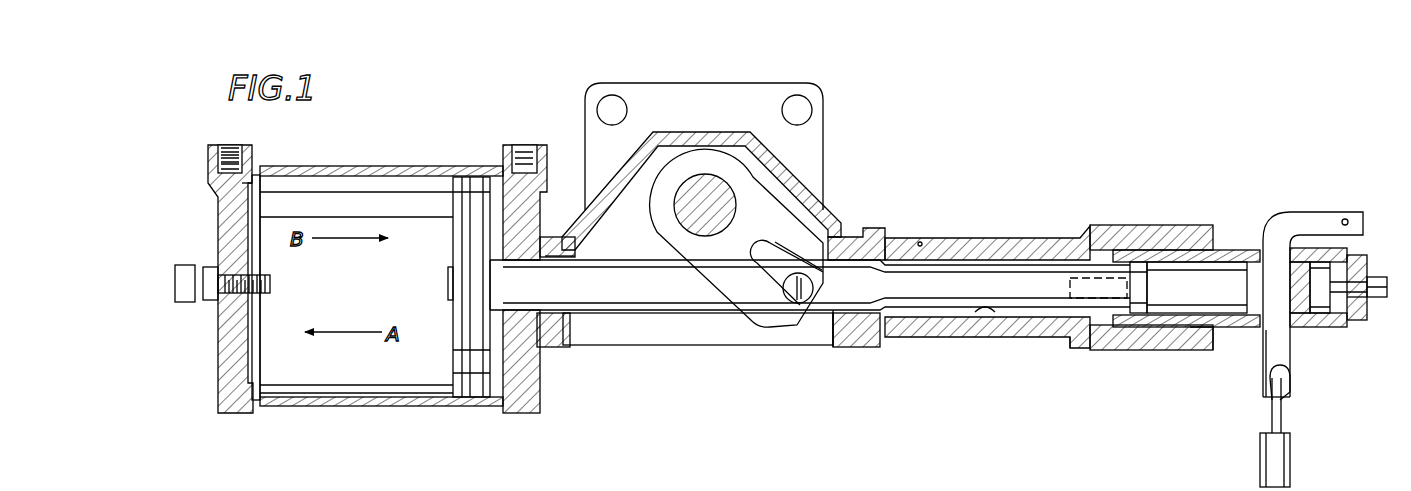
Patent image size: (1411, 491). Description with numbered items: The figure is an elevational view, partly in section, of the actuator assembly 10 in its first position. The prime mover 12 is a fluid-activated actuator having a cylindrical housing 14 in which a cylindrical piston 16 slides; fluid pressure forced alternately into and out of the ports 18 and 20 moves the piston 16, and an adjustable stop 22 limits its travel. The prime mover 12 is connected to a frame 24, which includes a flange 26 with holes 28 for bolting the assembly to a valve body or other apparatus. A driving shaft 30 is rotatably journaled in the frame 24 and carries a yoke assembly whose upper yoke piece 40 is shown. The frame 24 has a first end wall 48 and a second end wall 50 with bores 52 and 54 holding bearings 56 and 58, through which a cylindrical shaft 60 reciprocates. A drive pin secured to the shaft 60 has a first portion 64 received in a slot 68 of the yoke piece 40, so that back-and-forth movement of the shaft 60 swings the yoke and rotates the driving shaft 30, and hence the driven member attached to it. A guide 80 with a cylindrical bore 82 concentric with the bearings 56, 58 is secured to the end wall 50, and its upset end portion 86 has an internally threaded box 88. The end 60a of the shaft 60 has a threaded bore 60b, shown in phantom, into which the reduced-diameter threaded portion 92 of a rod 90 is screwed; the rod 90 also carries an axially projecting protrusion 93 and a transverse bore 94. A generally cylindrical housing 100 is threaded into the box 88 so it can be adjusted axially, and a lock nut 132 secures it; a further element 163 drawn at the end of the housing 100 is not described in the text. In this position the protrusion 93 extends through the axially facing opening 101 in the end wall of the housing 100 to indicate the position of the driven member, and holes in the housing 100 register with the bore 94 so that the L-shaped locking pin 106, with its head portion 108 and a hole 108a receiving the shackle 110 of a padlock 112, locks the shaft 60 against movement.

The actuator assembly 10 is at (982, 142).
The prime mover 12 is at (353, 164).
The cylindrical housing 14 is at (400, 167).
The cylindrical piston 16 is at (464, 396).
The port 18 is at (522, 148).
The port 20 is at (229, 150).
The adjustable stop 22 is at (208, 302).
The frame 24 is at (818, 84).
The flange 26 is at (605, 95).
The holes 28 is at (808, 112).
The driving shaft 30 is at (690, 202).
The upper yoke piece 40 is at (697, 268).
The first end wall 48 is at (550, 338).
The second end wall 50 is at (850, 348).
The bore 52 is at (562, 262).
The bore 54 is at (832, 312).
The bearing 56 is at (548, 250).
The bearing 58 is at (855, 248).
The cylindrical shaft 60 is at (976, 264).
The end of shaft 60a is at (1072, 345).
The threaded bore 60b is at (1103, 276).
The first portion of drive pin 64 is at (790, 292).
The slot 68 is at (787, 252).
The guide 80 is at (1047, 244).
The cylindrical bore 82 is at (985, 318).
The upset end portion 86 is at (1147, 240).
The internally threaded box 88 is at (1190, 254).
The rod 90 is at (1225, 302).
The reduced diameter threaded portion 92 is at (1137, 320).
The axially projecting protrusion 93 is at (1380, 280).
The transverse bore 94 is at (1272, 240).
The housing 100 is at (1312, 322).
The axially facing opening 101 is at (1372, 300).
The locking pin 106 is at (1272, 346).
The head portion 108 is at (1328, 218).
The hook 108a is at (1285, 368).
The shackle 110 is at (1275, 425).
The padlock 112 is at (1291, 460).
The lock nut 132 is at (1197, 348).
The washer 163 is at (1352, 322).